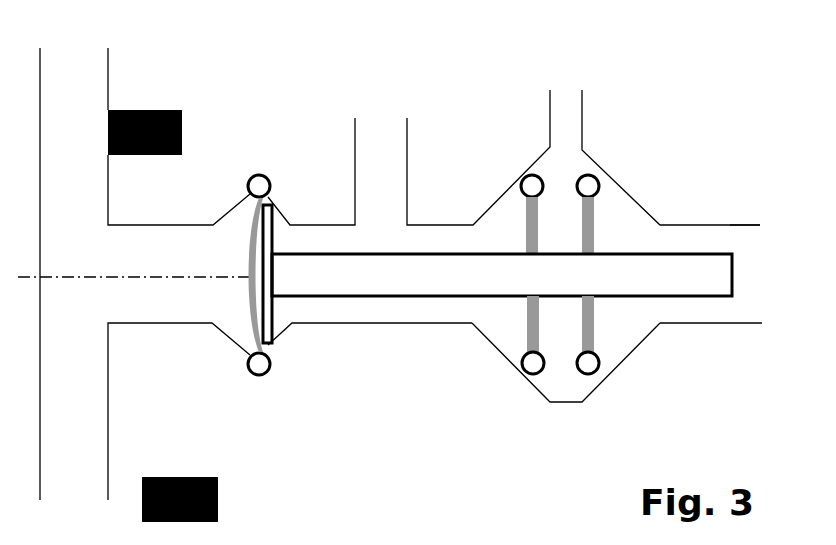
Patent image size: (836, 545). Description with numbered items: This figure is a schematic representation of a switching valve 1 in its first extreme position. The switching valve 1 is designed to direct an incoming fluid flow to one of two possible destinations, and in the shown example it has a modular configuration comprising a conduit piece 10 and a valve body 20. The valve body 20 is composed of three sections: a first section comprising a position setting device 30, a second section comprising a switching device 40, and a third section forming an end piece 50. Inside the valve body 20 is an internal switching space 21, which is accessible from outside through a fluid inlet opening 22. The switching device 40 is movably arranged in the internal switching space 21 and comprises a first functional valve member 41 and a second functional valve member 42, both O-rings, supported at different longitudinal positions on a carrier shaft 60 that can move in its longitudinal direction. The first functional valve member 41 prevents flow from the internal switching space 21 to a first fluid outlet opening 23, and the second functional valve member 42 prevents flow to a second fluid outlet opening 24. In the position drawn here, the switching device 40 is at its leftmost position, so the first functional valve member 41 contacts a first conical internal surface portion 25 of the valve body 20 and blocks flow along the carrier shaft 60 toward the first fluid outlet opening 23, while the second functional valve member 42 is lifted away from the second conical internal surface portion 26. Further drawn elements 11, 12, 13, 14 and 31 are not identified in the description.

The switching valve 1 is at (640, 102).
The conduit piece 10 is at (145, 132).
The lower frame wall 11 is at (83, 395).
The second drive unit 12 is at (75, 497).
The upper frame wall 13 is at (73, 176).
The frame 14 is at (70, 52).
The valve body 20 is at (515, 356).
The internal switching space 21 is at (560, 338).
The fluid inlet opening 22 is at (563, 92).
The first fluid outlet opening 23 is at (377, 122).
The second fluid outlet opening 24 is at (760, 253).
The first conical internal surface portion 25 is at (525, 173).
The second conical internal surface portion 26 is at (613, 177).
The position setting device 30 is at (248, 162).
The flexible coupling element 31 is at (258, 205).
The switching device 40 is at (588, 165).
The first functional valve member 41 is at (532, 328).
The second functional valve member 42 is at (592, 330).
The end piece 50 is at (708, 198).
The carrier shaft 60 is at (412, 280).